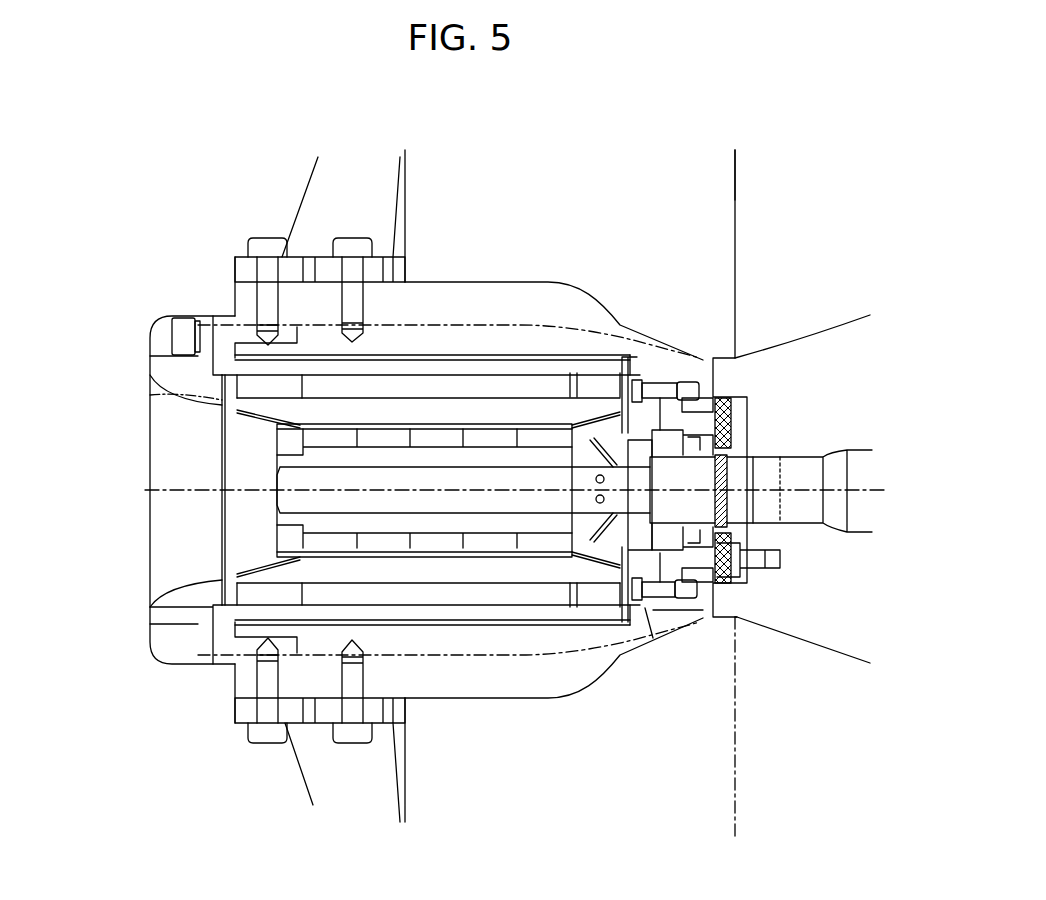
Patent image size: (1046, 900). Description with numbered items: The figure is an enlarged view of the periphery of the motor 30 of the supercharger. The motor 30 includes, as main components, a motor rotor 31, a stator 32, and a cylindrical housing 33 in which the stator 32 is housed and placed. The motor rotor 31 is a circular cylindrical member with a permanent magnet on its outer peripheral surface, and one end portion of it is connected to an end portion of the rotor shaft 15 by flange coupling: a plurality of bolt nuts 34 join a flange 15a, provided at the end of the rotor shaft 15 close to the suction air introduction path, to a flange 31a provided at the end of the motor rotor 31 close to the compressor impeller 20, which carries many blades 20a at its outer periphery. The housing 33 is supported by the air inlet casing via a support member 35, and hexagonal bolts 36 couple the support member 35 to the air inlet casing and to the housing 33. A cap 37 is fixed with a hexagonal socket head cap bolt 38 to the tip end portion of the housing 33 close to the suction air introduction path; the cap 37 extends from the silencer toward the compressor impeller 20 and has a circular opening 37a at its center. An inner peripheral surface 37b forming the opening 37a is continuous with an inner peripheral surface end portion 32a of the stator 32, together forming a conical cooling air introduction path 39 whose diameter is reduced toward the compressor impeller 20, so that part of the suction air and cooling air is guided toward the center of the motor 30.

The rotor shaft 15 is at (858, 462).
The flange 15a is at (673, 378).
The compressor impeller 20 is at (818, 630).
The blades 20a is at (750, 208).
The motor 30 is at (163, 703).
The motor rotor 31 is at (452, 522).
The flange 31a is at (653, 377).
The stator 32 is at (487, 385).
The inner peripheral surface end portion 32a is at (258, 562).
The housing 33 is at (245, 640).
The bolt nuts 34 is at (640, 372).
The support member 35 is at (313, 805).
The hexagonal bolts 36 is at (268, 238).
The cap 37 is at (160, 640).
The circular opening 37a is at (160, 580).
The inner peripheral surface 37b is at (195, 580).
The hexagonal socket head cap bolt 38 is at (183, 330).
The conical cooling air introduction path 39 is at (185, 392).